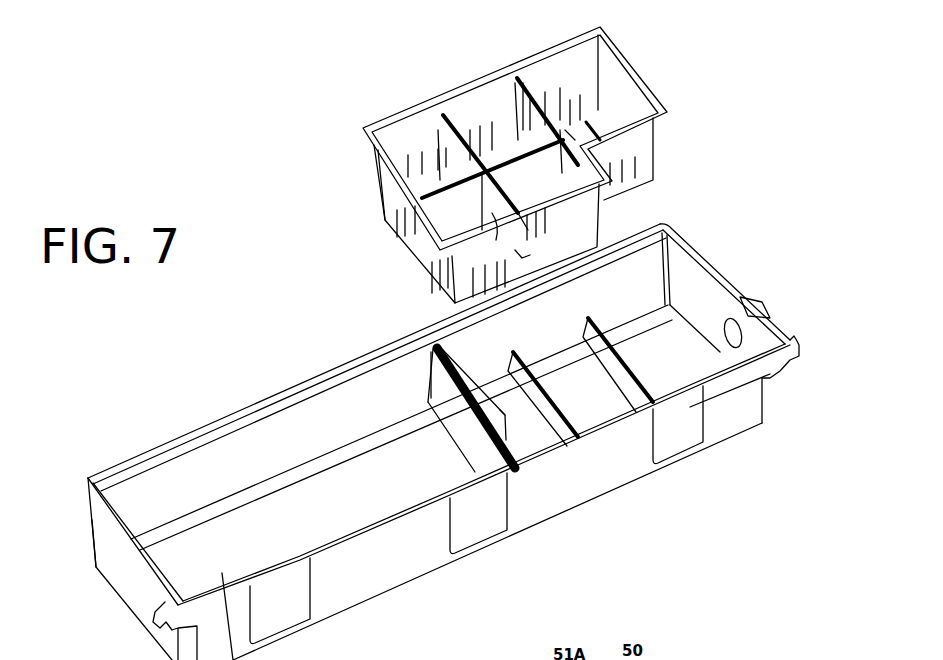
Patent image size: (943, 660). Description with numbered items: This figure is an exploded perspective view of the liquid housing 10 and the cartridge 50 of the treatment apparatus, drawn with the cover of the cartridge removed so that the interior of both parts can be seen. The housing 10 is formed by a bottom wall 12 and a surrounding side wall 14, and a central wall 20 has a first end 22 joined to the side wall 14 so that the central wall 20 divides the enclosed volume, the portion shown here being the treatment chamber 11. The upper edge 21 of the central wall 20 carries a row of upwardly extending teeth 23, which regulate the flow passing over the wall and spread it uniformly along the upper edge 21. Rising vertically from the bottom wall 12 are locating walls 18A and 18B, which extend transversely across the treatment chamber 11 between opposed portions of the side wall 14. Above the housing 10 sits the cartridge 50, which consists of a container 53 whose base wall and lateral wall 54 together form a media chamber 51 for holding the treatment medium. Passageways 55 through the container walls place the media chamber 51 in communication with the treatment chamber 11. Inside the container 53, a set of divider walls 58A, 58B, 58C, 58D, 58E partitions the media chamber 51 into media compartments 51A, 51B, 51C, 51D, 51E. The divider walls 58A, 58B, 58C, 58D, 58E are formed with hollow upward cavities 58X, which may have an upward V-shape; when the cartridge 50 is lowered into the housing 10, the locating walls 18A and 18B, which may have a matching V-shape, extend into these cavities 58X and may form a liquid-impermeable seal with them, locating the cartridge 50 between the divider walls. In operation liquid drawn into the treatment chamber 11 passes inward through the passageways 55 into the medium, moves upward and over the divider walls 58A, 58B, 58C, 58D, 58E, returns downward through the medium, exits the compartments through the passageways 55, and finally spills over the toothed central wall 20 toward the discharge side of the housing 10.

The housing 10 is at (405, 593).
The treatment chamber 11 is at (672, 342).
The bottom wall 12 is at (347, 518).
The side wall 14 is at (118, 570).
The locating wall 18A is at (618, 367).
The locating wall 18B is at (535, 397).
The central wall 20 is at (477, 449).
The upper edge 21 is at (448, 366).
The first end 22 is at (431, 393).
The teeth 23 is at (505, 416).
The cartridge 50 is at (440, 80).
The media chamber 51 is at (573, 183).
The media compartment 51A is at (620, 123).
The media compartment 51B is at (512, 142).
The media compartment 51C is at (533, 193).
The media compartment 51D is at (410, 188).
The media compartment 51E is at (460, 223).
The container 53 is at (383, 224).
The lateral wall 54 is at (642, 150).
The passageways 55 is at (567, 137).
The divider wall 58A is at (530, 117).
The divider wall 58B is at (452, 155).
The divider wall 58C is at (530, 225).
The divider wall 58D is at (422, 198).
The divider wall 58E is at (595, 130).
The hollow upward cavities 58X is at (522, 258).